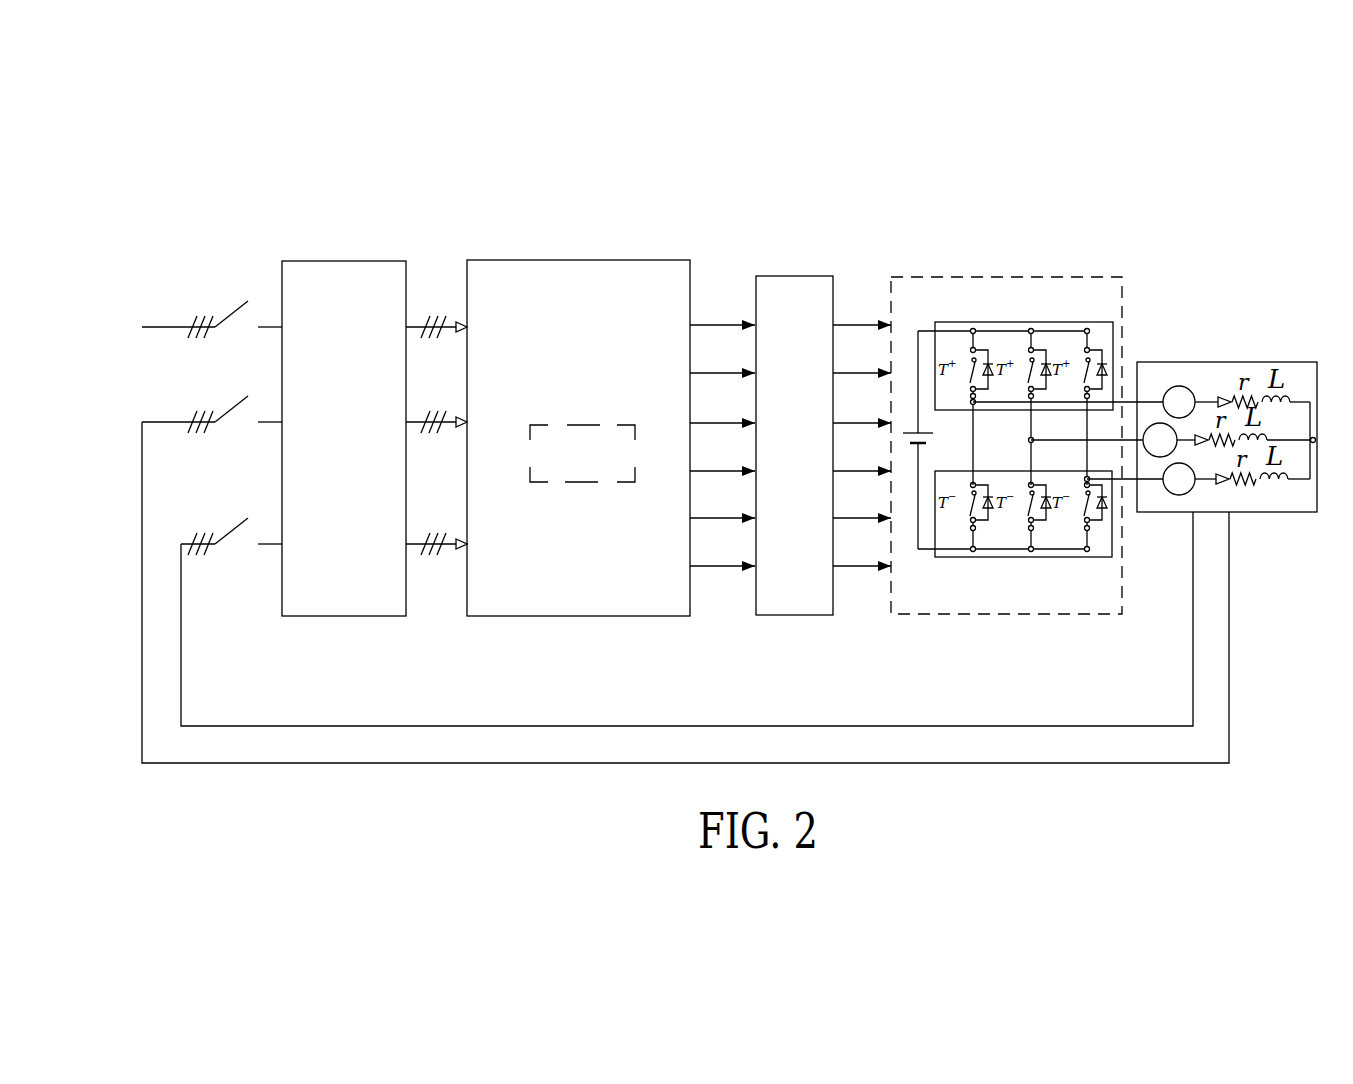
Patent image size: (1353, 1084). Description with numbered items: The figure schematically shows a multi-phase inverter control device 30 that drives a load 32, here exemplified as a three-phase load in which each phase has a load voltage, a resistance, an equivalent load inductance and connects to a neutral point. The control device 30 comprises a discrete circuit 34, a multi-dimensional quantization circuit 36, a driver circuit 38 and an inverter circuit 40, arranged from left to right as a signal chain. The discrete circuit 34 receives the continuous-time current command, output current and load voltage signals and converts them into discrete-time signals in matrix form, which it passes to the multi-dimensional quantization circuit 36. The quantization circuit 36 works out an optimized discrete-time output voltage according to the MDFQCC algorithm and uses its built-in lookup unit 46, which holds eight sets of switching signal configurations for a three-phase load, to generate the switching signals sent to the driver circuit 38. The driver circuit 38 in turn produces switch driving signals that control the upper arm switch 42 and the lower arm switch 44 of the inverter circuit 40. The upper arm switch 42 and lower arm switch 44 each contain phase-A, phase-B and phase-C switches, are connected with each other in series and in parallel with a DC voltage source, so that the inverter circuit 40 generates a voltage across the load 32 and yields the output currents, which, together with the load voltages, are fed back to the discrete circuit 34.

The multi-phase inverter control device 30 is at (200, 207).
The load 32 is at (1208, 362).
The discrete circuit 34 is at (318, 261).
The multi-dimensional quantization circuit 36 is at (611, 386).
The driver circuit 38 is at (800, 276).
The inverter circuit 40 is at (1027, 429).
The upper arm switch 42 is at (1003, 322).
The lower arm switch 44 is at (1005, 557).
The lookup unit 46 is at (572, 422).